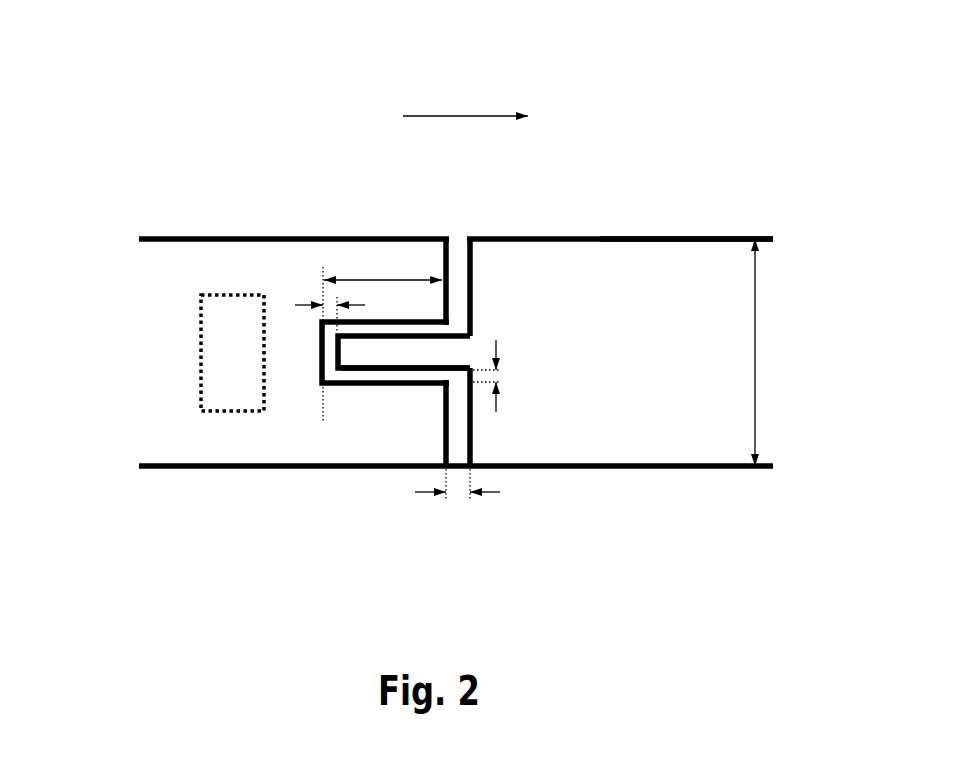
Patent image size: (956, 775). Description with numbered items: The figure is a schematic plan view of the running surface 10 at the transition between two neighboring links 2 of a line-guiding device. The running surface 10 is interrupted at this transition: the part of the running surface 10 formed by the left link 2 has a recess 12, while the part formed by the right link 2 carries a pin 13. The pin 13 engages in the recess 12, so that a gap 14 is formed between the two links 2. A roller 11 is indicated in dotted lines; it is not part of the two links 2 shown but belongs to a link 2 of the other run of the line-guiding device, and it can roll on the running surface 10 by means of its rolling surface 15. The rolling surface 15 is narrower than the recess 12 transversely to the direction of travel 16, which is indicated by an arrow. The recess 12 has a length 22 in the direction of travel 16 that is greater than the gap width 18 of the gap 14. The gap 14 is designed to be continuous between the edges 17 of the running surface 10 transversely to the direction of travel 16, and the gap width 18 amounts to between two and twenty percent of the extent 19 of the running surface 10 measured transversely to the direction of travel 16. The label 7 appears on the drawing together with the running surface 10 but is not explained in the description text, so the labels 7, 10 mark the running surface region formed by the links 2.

The link 2 is at (234, 237).
The housing part 7 is at (167, 258).
The running surface 10 is at (717, 262).
The roller 11 is at (236, 411).
The recess 12 is at (349, 386).
The pin 13 is at (400, 355).
The gap 14 is at (415, 375).
The rolling surface 15 is at (218, 358).
The direction of travel 16 is at (460, 116).
The edges 17 is at (555, 239).
The gap width 18 is at (325, 300).
The extent 19 is at (762, 390).
The length 22 is at (373, 280).